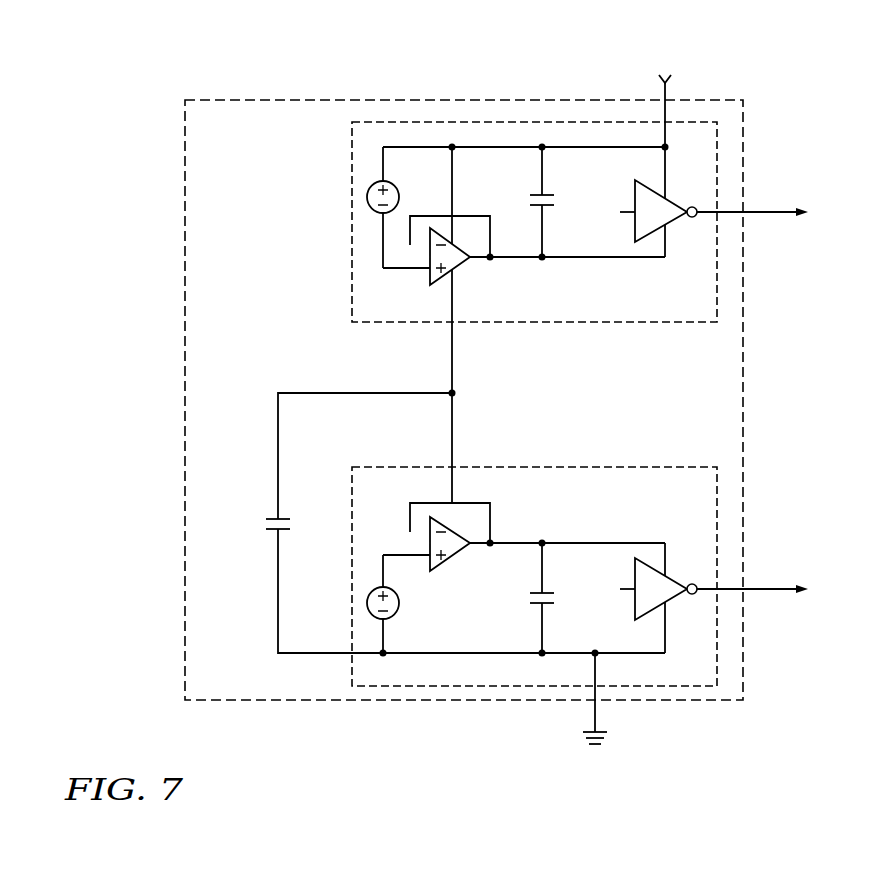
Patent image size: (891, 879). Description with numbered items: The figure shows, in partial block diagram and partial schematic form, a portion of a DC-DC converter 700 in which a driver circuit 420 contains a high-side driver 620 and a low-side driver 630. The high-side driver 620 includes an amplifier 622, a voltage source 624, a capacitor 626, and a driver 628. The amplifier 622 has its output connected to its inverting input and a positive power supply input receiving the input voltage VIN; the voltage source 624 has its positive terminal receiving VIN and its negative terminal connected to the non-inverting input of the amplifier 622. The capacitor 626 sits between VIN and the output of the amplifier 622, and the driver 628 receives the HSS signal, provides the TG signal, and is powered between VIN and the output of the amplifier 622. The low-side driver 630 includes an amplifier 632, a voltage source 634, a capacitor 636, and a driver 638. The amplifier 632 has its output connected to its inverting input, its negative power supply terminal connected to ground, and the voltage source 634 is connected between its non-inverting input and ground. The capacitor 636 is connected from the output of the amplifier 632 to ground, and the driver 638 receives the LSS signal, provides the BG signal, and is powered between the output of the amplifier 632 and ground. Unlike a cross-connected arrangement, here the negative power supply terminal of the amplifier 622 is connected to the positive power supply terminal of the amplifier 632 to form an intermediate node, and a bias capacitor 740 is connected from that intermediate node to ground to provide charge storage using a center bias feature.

The DC-DC converter 700 is at (160, 72).
The driver circuit 420 is at (500, 100).
The high-side driver 620 is at (410, 323).
The amplifier 622 is at (428, 283).
The voltage source 624 is at (398, 186).
The capacitor 626 is at (537, 194).
The driver 628 is at (633, 228).
The low-side driver 630 is at (410, 467).
The amplifier 632 is at (428, 541).
The voltage source 634 is at (397, 614).
The capacitor 636 is at (538, 597).
The driver 638 is at (633, 576).
The bias capacitor 740 is at (268, 516).